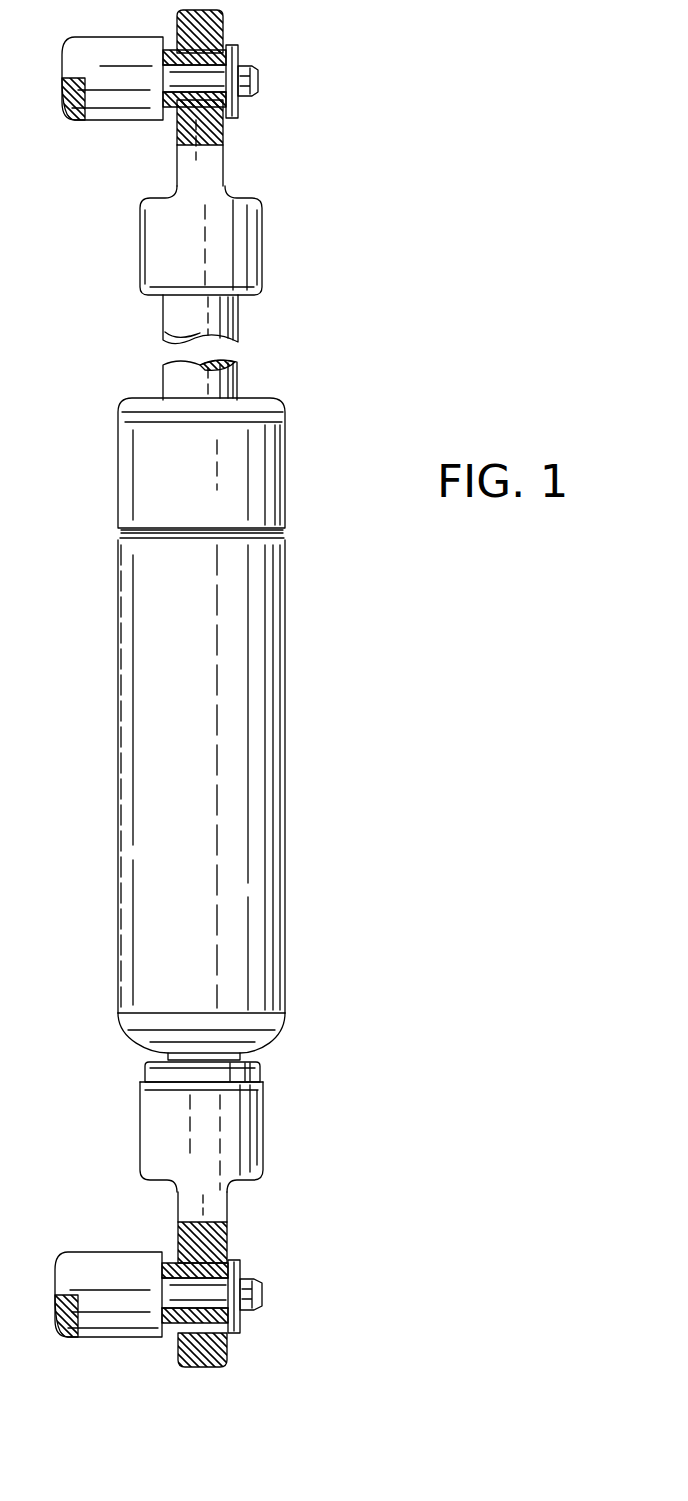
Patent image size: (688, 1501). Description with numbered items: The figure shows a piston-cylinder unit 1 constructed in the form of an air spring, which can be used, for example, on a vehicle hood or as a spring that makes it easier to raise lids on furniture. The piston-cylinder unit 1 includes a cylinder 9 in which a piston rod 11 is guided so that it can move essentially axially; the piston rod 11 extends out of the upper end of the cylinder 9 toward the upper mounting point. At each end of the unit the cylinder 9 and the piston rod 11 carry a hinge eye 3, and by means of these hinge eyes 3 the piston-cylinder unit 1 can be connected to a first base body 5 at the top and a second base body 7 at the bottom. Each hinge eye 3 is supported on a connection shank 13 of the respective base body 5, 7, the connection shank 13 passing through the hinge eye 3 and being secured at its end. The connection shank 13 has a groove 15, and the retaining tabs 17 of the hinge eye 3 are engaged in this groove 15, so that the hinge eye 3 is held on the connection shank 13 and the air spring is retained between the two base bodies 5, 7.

The piston-cylinder unit 1 is at (313, 708).
The hinge eye 3 is at (280, 243).
The first base body 5 is at (108, 112).
The second base body 7 is at (93, 1260).
The cylinder 9 is at (272, 925).
The piston rod 11 is at (165, 313).
The connection shank 13 is at (258, 70).
The groove 15 is at (239, 98).
The retaining tabs 17 is at (232, 118).